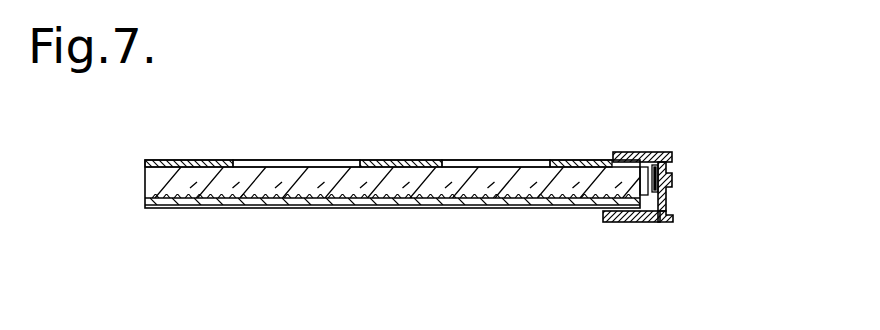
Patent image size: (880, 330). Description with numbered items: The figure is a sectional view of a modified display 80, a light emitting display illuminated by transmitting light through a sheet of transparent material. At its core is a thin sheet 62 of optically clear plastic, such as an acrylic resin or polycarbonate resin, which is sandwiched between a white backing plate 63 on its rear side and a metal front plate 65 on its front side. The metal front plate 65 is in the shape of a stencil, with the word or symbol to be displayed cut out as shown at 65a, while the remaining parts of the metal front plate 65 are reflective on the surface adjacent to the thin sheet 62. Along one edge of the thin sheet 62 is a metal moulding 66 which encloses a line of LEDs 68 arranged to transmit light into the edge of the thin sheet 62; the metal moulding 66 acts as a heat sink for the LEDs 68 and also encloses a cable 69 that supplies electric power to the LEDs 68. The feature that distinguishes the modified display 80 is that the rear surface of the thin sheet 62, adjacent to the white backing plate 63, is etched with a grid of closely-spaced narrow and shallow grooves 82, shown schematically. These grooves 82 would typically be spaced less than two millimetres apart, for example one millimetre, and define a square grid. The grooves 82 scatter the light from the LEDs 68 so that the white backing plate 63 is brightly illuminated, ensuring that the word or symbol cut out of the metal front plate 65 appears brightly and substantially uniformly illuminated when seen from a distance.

The thin sheet 62 is at (156, 185).
The metal front plate 65 is at (185, 164).
The cut out 65a is at (280, 164).
The white backing plate 63 is at (235, 206).
The grooves 82 is at (315, 204).
The modified display 80 is at (630, 140).
The LEDs 68 is at (660, 173).
The metal moulding 66 is at (632, 222).
The cable 69 is at (660, 222).